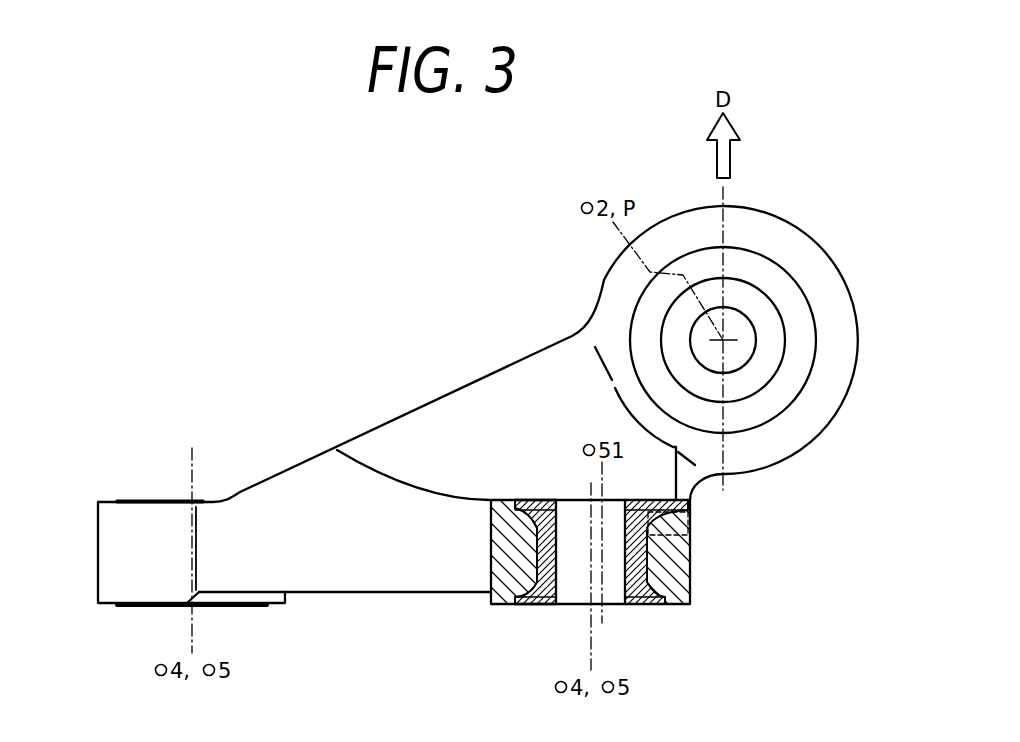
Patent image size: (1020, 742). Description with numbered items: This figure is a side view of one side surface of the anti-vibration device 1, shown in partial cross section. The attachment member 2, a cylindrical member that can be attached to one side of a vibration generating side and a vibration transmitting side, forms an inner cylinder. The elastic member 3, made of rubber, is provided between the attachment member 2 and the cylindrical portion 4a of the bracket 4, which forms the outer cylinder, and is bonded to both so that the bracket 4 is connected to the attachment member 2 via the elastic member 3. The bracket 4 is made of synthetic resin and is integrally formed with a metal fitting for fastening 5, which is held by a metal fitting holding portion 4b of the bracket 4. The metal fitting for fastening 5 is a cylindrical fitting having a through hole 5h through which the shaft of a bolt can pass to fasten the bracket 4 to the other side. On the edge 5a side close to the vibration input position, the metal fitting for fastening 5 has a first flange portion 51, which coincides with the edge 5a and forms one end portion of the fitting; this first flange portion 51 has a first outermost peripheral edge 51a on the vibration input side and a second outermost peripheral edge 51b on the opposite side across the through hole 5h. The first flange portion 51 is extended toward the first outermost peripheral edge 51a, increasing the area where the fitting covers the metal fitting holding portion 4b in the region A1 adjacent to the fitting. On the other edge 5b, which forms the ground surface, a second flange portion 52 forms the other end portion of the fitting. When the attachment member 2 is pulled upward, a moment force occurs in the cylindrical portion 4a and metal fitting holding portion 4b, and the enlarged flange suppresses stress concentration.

The anti-vibration device 1 is at (395, 272).
The attachment member 2 is at (742, 290).
The elastic member 3 is at (778, 282).
The bracket 4 is at (427, 403).
The cylindrical portion 4a is at (847, 280).
The metal fitting holding portion 4b is at (98, 553).
The metal fitting for fastening 5 is at (541, 548).
The edge 5a is at (535, 500).
The other edge 5b is at (538, 600).
The through hole 5h is at (582, 582).
The first flange portion 51 is at (514, 491).
The first outermost peripheral edge 51a is at (690, 507).
The second outermost peripheral edge 51b is at (513, 508).
The second flange portion 52 is at (652, 616).
The region A1 is at (678, 531).